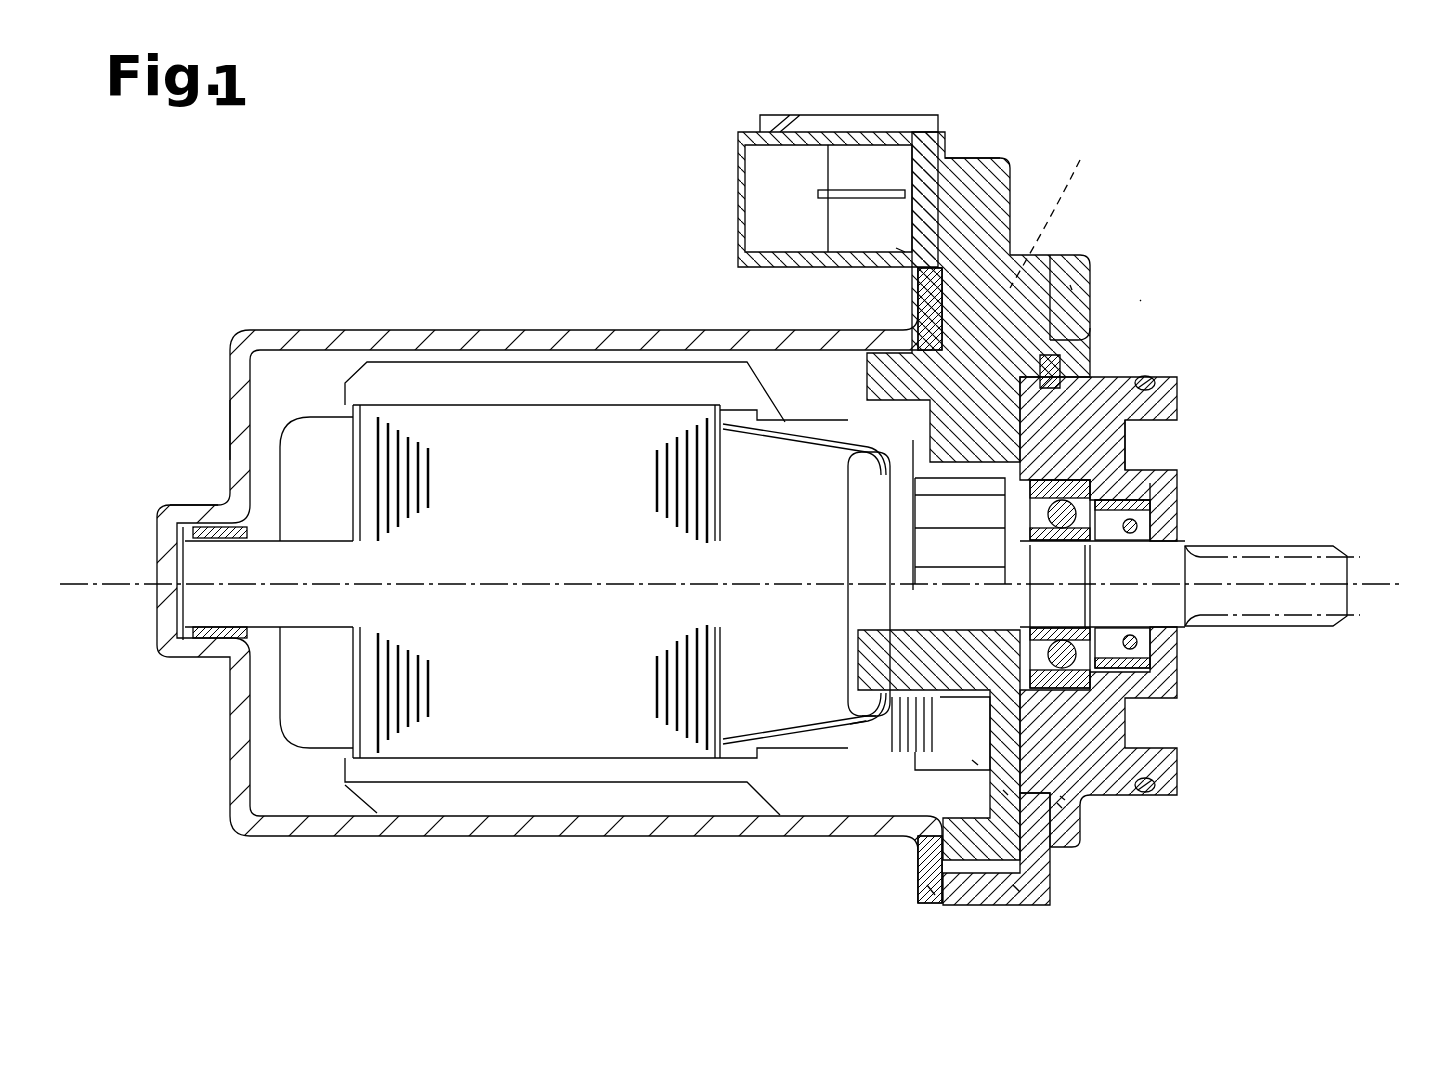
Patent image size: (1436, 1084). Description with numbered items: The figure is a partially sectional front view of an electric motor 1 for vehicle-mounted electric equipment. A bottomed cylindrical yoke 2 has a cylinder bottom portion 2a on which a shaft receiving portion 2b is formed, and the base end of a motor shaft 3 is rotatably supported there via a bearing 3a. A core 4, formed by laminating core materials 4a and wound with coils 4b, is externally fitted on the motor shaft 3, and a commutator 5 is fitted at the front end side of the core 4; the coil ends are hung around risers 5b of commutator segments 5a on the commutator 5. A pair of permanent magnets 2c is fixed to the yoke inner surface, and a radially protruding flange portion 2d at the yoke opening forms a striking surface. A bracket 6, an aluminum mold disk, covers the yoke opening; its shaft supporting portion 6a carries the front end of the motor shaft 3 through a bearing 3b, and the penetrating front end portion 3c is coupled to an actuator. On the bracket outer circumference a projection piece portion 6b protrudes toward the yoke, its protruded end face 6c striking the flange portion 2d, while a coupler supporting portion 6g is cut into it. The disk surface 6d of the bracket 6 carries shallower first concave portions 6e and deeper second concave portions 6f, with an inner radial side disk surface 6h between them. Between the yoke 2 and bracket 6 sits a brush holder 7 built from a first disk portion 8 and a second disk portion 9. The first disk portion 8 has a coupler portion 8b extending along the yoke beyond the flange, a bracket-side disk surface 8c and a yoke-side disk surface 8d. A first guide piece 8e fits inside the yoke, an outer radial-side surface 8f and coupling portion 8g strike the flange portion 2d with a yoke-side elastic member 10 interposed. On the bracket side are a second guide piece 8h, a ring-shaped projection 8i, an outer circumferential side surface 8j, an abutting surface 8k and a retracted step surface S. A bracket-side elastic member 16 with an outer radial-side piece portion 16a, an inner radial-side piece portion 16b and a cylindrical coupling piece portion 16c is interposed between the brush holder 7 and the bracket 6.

The electric motor 1 is at (1290, 260).
The yoke 2 is at (463, 328).
The cylinder bottom portion 2a is at (228, 435).
The shaft receiving portion 2b is at (208, 508).
The permanent magnets 2c is at (492, 385).
The flange portion 2d is at (920, 296).
The motor shaft 3 is at (532, 598).
The bearing 3a is at (222, 645).
The bearing 3b is at (1075, 640).
The penetrating front end portion 3c is at (1335, 547).
The core 4 is at (583, 490).
The core materials 4a is at (385, 412).
The coils 4b is at (782, 425).
The commutator 5 is at (935, 505).
The commutator segments 5a is at (884, 700).
The risers 5b is at (862, 724).
The bracket 6 is at (1180, 398).
The shaft supporting portion 6a is at (1158, 483).
The projection piece portion 6b is at (1017, 890).
The protruded end face 6c is at (927, 890).
The disk surface 6d is at (1040, 318).
The first concave portions 6e is at (1092, 363).
The second concave portions 6f is at (1125, 425).
The coupler supporting portion 6g is at (1055, 205).
The inner radial side disk surface 6h is at (1035, 402).
The brush holder 7 is at (1000, 152).
The first disk portion 8 is at (1015, 183).
The coupler portion 8b is at (745, 130).
The bracket-side disk surface 8c is at (1092, 330).
The yoke-side disk surface 8d is at (922, 420).
The first guide piece 8e is at (893, 366).
The outer radial-side surface 8f is at (896, 248).
The coupling portion 8g is at (1070, 285).
The second guide piece 8h is at (1092, 428).
The projection 8i is at (1050, 370).
The outer circumferential side surface 8j is at (1092, 295).
The abutting surface 8k is at (908, 350).
The second disk portion 9 is at (1005, 790).
The yoke-side elastic member 10 is at (965, 400).
The bracket-side elastic member 16 is at (1150, 384).
The outer radial-side piece portion 16a is at (1057, 803).
The inner radial-side piece portion 16b is at (1092, 757).
The coupling piece portion 16c is at (1060, 796).
The step surface S is at (975, 760).